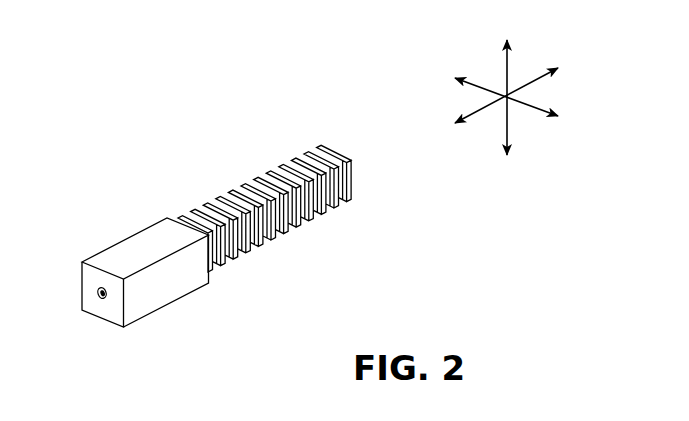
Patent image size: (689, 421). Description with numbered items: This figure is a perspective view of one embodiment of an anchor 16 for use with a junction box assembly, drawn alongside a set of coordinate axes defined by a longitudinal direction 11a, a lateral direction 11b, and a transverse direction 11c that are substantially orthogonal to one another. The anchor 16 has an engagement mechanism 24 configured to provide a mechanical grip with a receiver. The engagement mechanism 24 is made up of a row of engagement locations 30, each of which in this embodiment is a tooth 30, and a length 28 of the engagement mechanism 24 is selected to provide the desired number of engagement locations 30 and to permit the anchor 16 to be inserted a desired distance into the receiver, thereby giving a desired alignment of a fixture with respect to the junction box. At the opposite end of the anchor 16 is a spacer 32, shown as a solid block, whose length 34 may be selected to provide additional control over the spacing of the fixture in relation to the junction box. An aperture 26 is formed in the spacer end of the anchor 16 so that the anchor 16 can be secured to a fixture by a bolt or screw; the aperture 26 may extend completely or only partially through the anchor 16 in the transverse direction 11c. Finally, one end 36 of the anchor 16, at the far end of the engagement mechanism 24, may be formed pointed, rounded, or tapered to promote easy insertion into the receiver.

The anchor 16 is at (122, 116).
The engagement mechanism 24 is at (264, 180).
The aperture 26 is at (104, 297).
The length 28 is at (323, 143).
The engagement location 30 is at (287, 230).
The spacer 32 is at (112, 255).
The length 34 is at (170, 337).
The end 36 is at (348, 220).
The longitudinal direction 11a is at (510, 65).
The lateral direction 11b is at (533, 112).
The transverse direction 11c is at (538, 78).